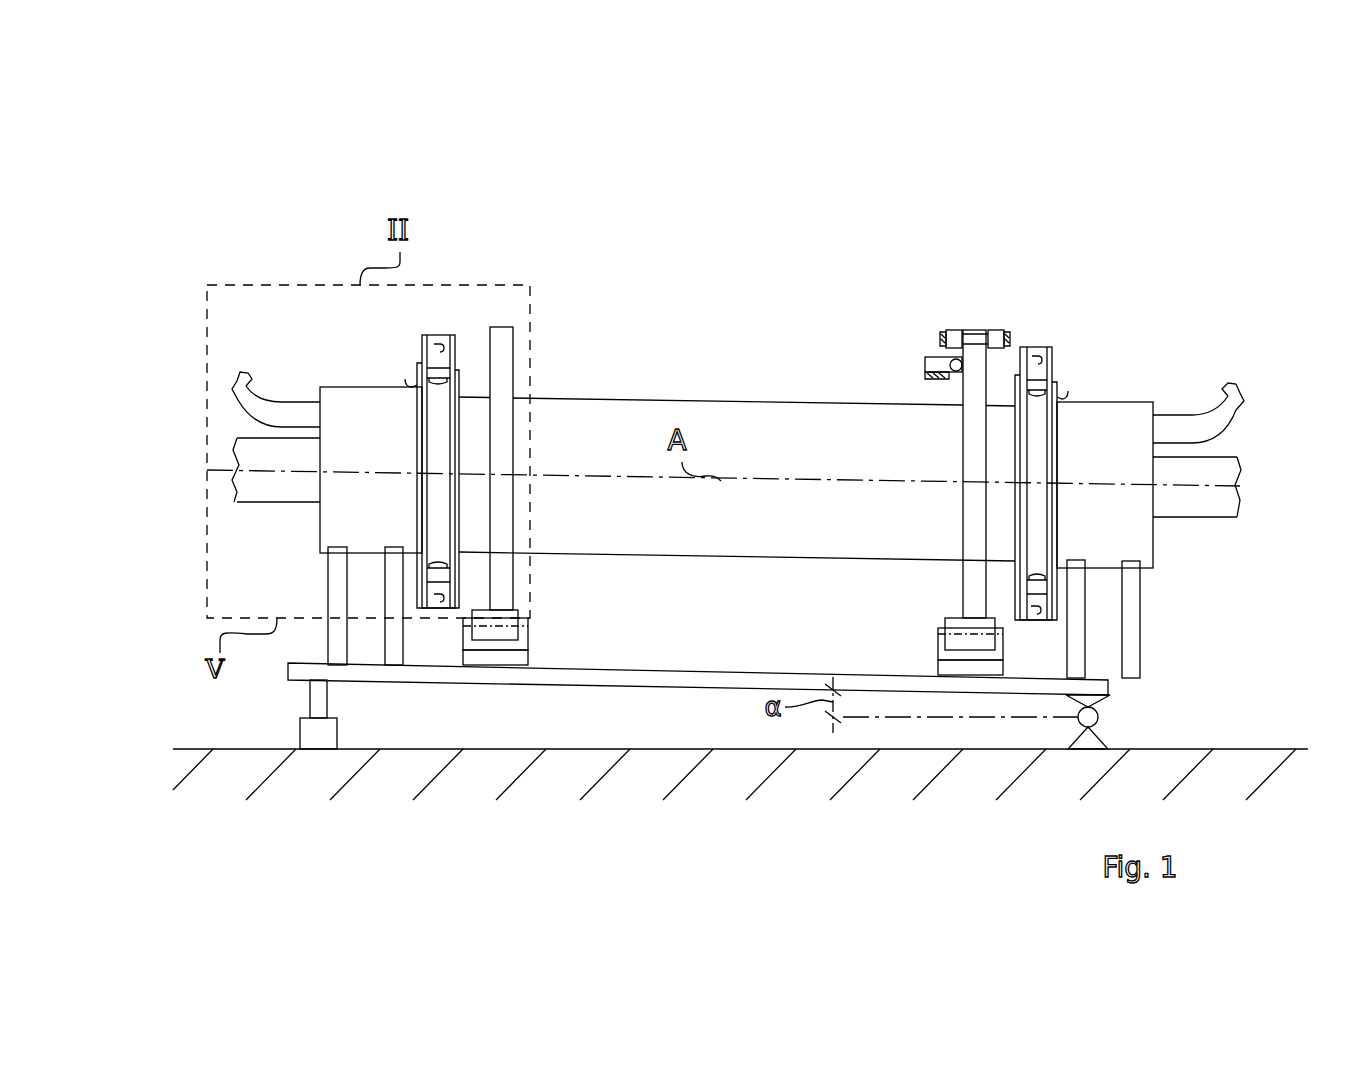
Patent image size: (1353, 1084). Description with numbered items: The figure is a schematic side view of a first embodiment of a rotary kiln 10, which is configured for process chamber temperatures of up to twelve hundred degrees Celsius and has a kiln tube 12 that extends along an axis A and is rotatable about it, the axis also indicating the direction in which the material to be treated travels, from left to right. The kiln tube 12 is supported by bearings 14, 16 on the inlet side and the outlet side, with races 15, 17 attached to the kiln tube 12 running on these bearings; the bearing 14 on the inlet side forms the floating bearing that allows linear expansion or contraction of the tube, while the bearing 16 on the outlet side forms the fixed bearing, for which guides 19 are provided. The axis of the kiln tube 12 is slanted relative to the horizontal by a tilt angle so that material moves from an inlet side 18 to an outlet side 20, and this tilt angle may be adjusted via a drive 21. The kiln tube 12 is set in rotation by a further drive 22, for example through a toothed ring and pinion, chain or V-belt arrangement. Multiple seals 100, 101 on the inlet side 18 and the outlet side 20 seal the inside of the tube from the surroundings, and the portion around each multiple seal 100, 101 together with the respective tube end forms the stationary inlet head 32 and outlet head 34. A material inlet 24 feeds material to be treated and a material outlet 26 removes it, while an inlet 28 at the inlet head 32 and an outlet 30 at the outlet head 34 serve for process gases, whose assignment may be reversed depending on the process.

The rotary kiln 10 is at (302, 174).
The kiln tube 12 is at (623, 397).
The bearing 14 is at (528, 626).
The race 15 is at (513, 567).
The bearing 16 is at (945, 640).
The race 17 is at (963, 580).
The inlet side 18 is at (322, 318).
The guides 19 is at (958, 332).
The outlet side 20 is at (1071, 300).
The drive 21 is at (300, 722).
The drive 22 is at (930, 357).
The material inlet 24 is at (260, 502).
The material outlet 26 is at (1187, 518).
The inlet 28 is at (262, 380).
The outlet 30 is at (1183, 413).
The inlet head 32 is at (390, 385).
The outlet head 34 is at (1122, 402).
The multiple seal 100 is at (447, 335).
The multiple seal 101 is at (1043, 347).